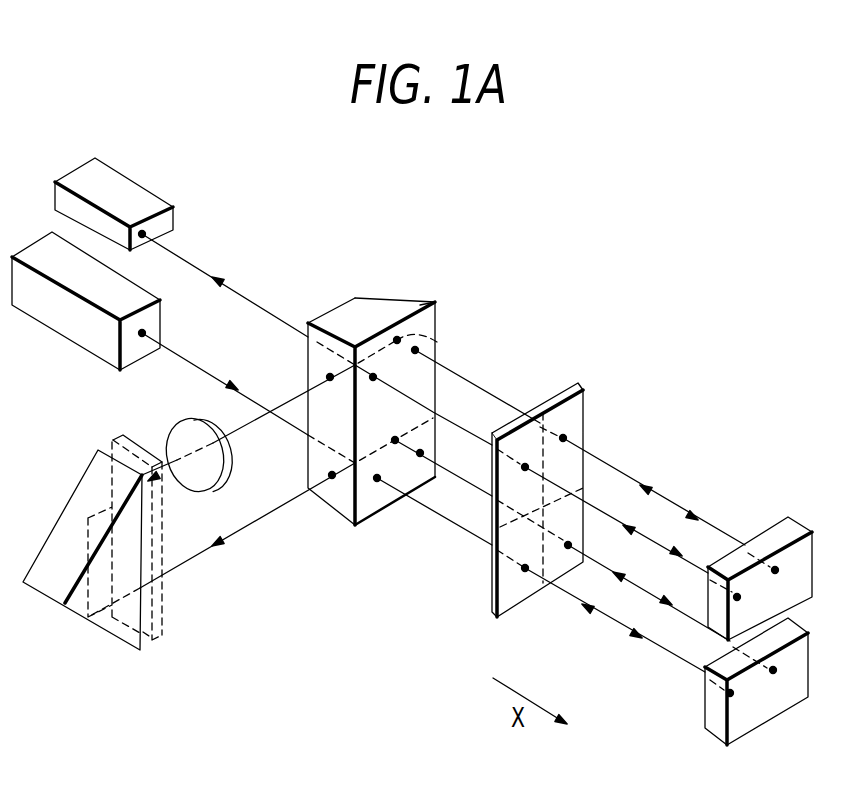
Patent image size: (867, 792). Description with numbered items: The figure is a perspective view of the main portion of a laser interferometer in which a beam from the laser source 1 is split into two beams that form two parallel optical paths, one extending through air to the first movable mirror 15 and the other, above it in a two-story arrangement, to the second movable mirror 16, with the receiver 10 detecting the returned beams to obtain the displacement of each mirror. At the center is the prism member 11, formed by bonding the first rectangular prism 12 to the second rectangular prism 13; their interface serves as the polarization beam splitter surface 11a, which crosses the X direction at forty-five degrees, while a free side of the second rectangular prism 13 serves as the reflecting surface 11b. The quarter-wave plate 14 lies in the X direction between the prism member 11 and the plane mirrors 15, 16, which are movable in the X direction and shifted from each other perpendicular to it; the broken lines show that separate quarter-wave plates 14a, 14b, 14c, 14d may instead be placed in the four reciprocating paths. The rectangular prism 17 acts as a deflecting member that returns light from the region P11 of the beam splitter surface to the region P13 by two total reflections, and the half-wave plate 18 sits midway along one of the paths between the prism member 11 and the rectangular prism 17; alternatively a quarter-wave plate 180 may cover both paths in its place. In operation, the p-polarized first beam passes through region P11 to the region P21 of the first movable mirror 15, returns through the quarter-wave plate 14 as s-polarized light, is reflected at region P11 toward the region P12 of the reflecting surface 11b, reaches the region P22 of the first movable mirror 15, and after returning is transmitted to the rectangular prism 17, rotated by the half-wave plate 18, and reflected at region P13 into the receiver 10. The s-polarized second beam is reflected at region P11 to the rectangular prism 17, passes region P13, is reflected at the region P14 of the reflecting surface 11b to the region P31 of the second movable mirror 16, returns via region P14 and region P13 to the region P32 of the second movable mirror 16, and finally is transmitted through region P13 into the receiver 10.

The laser source 1 is at (82, 353).
The receiver 10 is at (138, 182).
The prism member 11 is at (420, 416).
The polarization beam splitter surface 11a is at (357, 502).
The reflecting surface 11b is at (437, 313).
The first rectangular prism 12 is at (332, 316).
The second rectangular prism 13 is at (395, 301).
The λ/4 plate 14 is at (543, 517).
The λ/4 plate 14a is at (520, 587).
The λ/4 plate 14b is at (575, 527).
The λ/4 plate 14c is at (577, 420).
The λ/4 plate 14d is at (510, 486).
The first movable mirror 15 is at (705, 700).
The second movable mirror 16 is at (758, 517).
The rectangular prism 17 is at (115, 640).
The λ/2 plate 18 is at (233, 457).
The λ/4 plate 180 is at (157, 640).
The region of the polarization beam splitter surface P11 is at (355, 465).
The region of the reflecting surface P12 is at (433, 418).
The region of the polarization beam splitter surface P13 is at (355, 367).
The region of the reflecting surface P14 is at (437, 342).
The region of the first movable mirror P21 is at (720, 695).
The region of the first movable mirror P22 is at (718, 652).
The region of the second movable mirror P31 is at (775, 566).
The region of the second movable mirror P32 is at (722, 568).